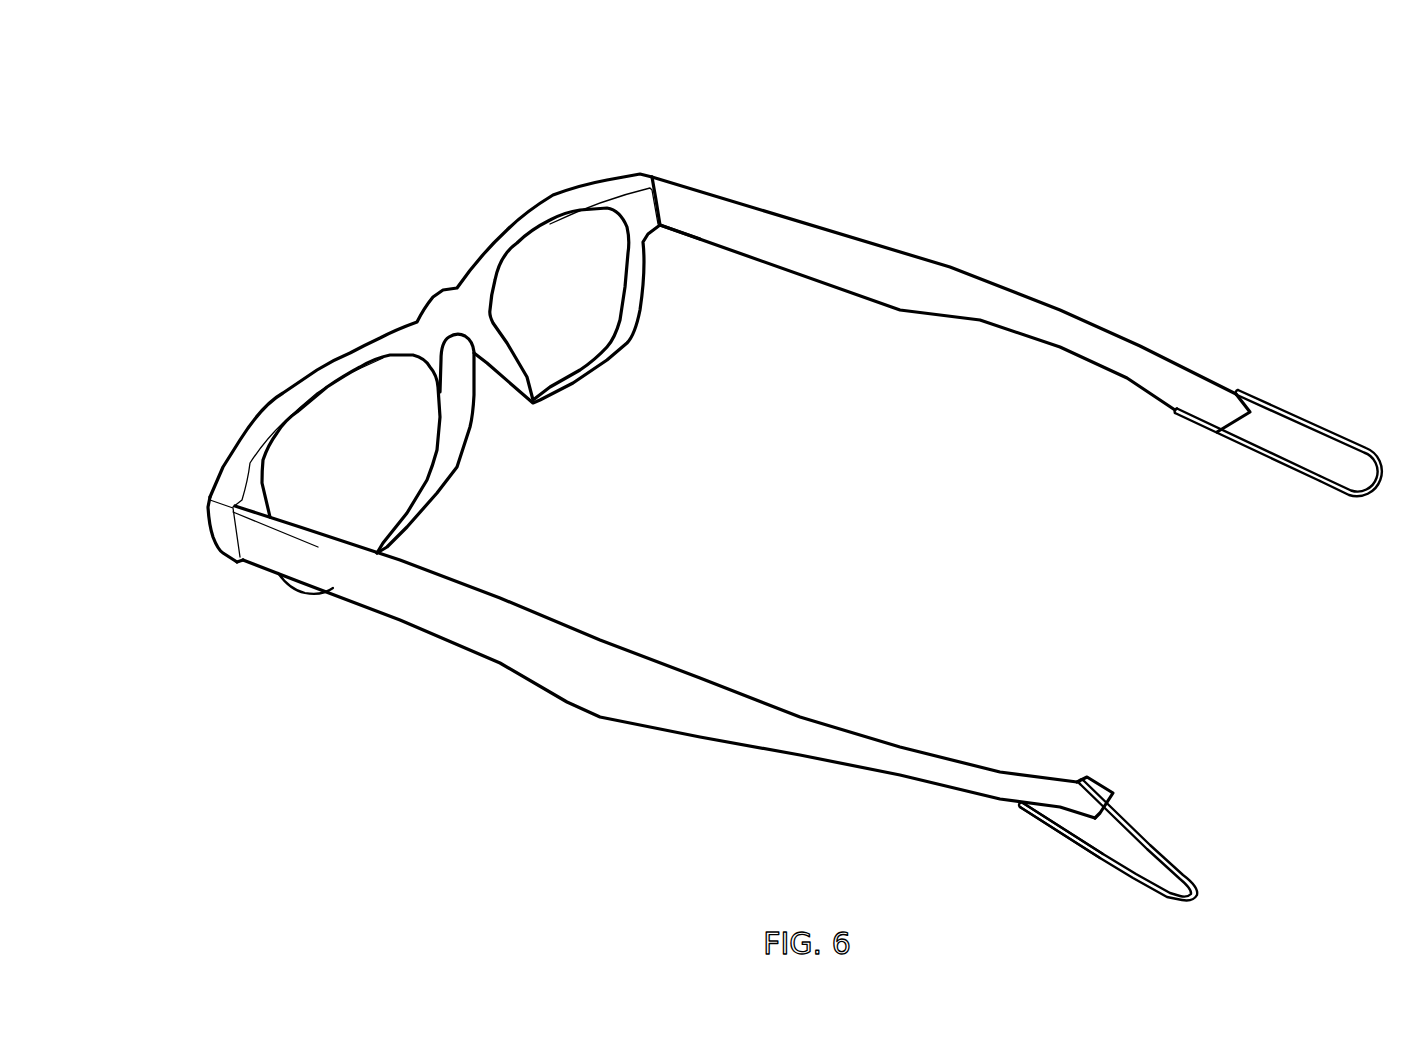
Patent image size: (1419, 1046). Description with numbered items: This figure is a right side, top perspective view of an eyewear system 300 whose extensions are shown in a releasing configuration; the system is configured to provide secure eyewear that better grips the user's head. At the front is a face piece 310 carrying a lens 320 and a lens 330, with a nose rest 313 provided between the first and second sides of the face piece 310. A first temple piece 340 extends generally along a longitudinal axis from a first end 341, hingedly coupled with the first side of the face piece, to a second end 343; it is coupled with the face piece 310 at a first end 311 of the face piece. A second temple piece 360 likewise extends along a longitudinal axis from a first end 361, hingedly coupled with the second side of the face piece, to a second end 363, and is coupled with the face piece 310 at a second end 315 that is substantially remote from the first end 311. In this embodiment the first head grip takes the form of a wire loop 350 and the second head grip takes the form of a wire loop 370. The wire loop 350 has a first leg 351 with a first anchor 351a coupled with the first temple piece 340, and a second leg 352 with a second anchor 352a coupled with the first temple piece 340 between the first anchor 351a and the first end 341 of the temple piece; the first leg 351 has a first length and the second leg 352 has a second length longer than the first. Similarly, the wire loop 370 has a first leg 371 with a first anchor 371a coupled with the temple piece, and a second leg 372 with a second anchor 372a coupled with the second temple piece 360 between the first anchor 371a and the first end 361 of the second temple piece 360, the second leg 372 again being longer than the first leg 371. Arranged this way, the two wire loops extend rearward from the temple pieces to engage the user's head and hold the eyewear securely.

The eyewear system 300 is at (268, 128).
The face piece 310 is at (400, 268).
The first end 311 is at (652, 176).
The nose rest 313 is at (532, 449).
The second end 315 is at (238, 565).
The lens 320 is at (570, 290).
The lens 330 is at (303, 480).
The first temple piece 340 is at (1005, 245).
The first end 341 is at (668, 228).
The second end 343 is at (1220, 292).
The wire loop 350 is at (1300, 520).
The first leg 351 is at (1340, 432).
The first anchor 351a is at (1238, 392).
The second leg 352 is at (1243, 448).
The second anchor 352a is at (1175, 415).
The second temple piece 360 is at (712, 790).
The first end 361 is at (257, 567).
The second end 363 is at (1040, 707).
The wire loop 370 is at (1252, 887).
The first leg 371 is at (1165, 856).
The first anchor 371a is at (1087, 778).
The second leg 372 is at (1087, 850).
The second anchor 372a is at (1020, 808).